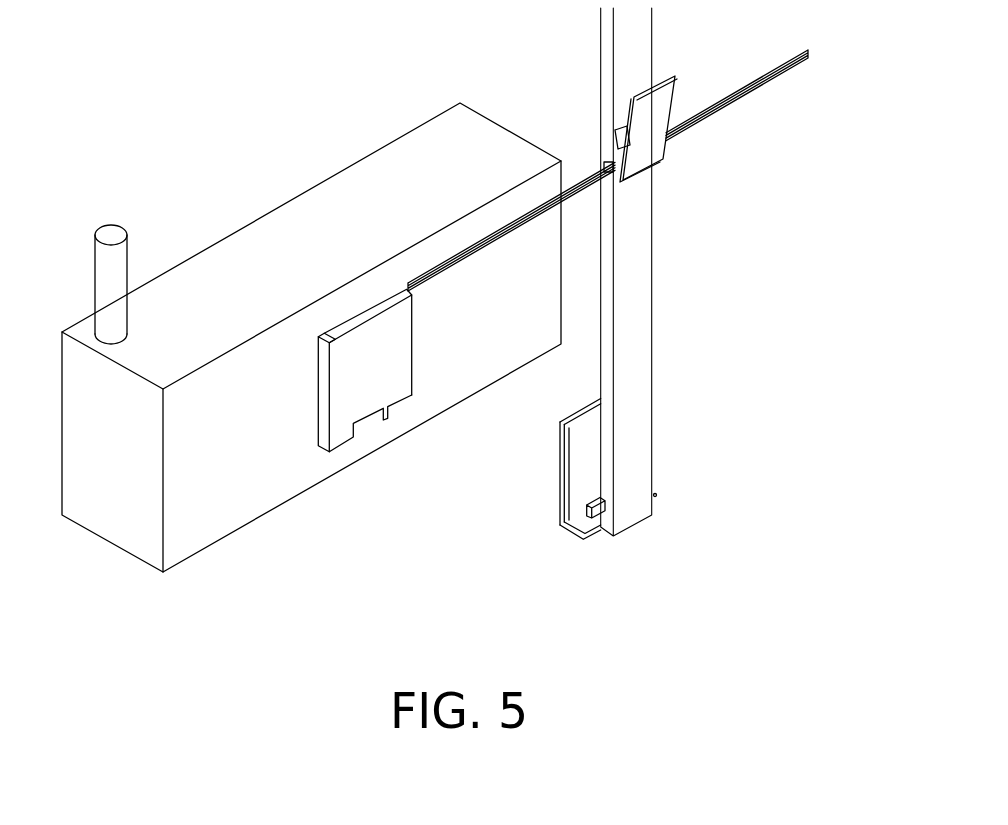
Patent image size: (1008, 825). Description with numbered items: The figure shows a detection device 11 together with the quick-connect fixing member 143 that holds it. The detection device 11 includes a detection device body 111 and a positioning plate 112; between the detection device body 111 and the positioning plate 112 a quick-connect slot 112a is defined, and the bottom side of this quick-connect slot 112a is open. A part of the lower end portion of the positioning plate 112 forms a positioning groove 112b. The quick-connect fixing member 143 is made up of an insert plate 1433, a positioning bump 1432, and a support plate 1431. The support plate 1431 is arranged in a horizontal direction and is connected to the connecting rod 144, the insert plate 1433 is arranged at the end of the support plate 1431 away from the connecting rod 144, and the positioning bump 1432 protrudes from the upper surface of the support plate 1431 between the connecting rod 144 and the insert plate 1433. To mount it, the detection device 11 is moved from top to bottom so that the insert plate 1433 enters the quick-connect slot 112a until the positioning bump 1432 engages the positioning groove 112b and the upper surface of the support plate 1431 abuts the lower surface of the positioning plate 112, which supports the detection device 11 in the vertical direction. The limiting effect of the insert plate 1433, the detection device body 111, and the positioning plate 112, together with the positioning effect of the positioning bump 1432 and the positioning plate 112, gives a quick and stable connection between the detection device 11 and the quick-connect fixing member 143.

The detection device 11 is at (66, 177).
The detection device body 111 is at (213, 297).
The positioning plate 112 is at (327, 393).
The quick-connect slot 112a is at (383, 303).
The positioning groove 112b is at (368, 427).
The quick-connect fixing member 143 is at (787, 628).
The support plate 1431 is at (593, 527).
The positioning bump 1432 is at (599, 513).
The insert plate 1433 is at (587, 448).
The connecting rod 144 is at (635, 330).